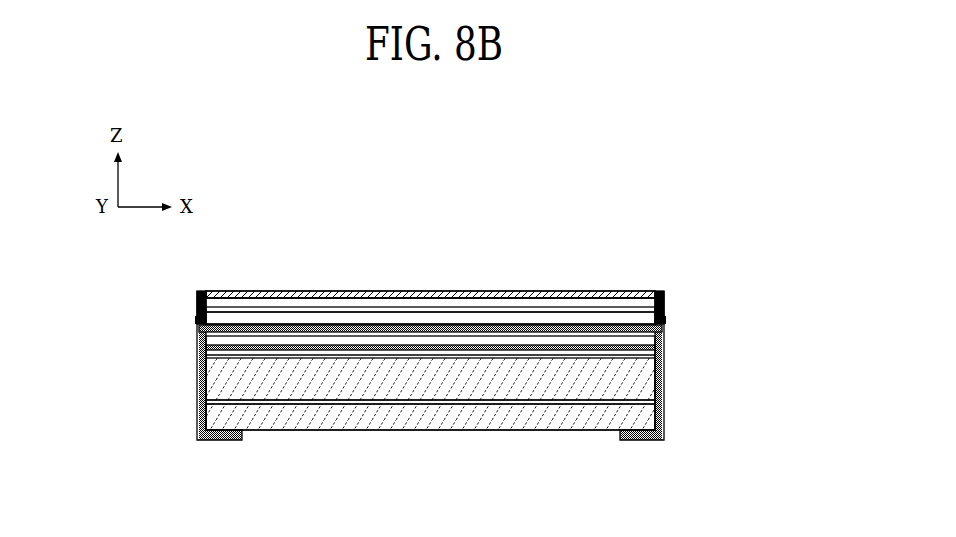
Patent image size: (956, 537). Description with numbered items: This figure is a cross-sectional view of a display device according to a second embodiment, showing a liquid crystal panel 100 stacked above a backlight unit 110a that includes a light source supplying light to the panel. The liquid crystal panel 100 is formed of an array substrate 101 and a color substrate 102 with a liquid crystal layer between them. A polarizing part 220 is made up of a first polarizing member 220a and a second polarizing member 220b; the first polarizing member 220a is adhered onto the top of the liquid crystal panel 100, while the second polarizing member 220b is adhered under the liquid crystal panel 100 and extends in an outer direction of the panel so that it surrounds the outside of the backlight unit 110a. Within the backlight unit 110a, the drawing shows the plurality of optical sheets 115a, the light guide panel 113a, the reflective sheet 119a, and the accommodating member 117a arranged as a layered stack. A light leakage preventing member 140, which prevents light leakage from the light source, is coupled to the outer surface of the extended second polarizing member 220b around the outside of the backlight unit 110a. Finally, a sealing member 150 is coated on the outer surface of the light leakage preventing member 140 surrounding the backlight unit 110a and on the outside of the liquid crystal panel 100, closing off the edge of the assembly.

The liquid crystal panel 100 is at (360, 222).
The array substrate 101 is at (300, 317).
The color substrate 102 is at (352, 308).
The polarizing part 220 is at (542, 243).
The first polarizing member 220a is at (473, 295).
The second polarizing member 220b is at (542, 327).
The sealing member 150 is at (197, 323).
The light leakage preventing member 140 is at (197, 410).
The backlight unit 110a is at (732, 355).
The optical sheets 115a is at (645, 351).
The light guide panel 113a is at (632, 375).
The reflective sheet 119a is at (643, 403).
The accommodating member 117a is at (632, 423).